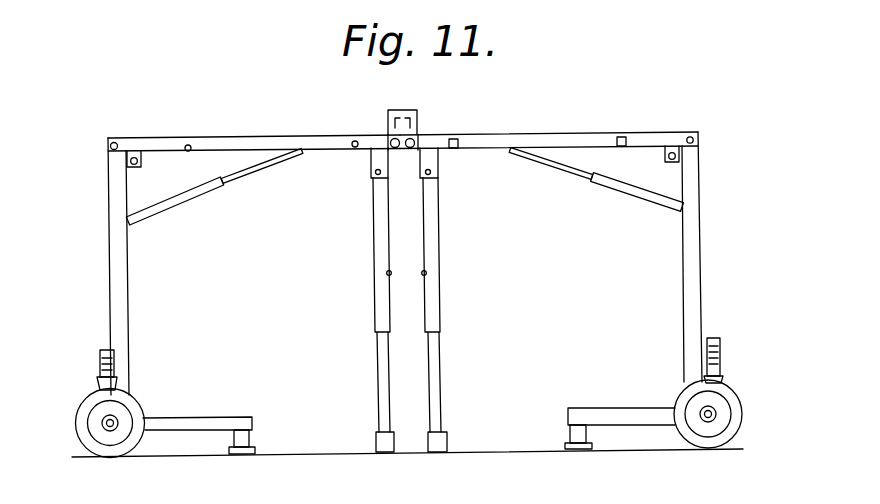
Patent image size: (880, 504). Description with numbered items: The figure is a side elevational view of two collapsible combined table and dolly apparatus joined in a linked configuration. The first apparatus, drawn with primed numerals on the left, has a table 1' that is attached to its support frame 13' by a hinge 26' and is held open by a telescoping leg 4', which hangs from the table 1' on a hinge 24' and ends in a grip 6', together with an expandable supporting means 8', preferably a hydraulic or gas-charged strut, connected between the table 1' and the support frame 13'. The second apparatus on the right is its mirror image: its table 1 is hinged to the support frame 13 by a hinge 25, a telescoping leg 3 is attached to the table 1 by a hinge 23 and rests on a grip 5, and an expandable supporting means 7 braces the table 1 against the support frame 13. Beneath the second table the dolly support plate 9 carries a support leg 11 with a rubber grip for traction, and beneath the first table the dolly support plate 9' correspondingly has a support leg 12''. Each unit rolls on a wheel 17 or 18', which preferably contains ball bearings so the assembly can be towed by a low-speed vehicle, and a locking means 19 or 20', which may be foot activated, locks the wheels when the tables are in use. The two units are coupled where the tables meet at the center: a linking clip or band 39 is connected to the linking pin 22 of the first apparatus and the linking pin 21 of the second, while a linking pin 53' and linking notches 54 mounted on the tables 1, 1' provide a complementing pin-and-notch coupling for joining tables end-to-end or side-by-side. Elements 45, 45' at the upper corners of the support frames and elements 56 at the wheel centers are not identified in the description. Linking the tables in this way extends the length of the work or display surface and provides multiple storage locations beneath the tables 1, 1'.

The table 1 is at (549, 121).
The table 1' is at (254, 123).
The telescoping leg 3 is at (437, 242).
The telescoping leg 4' is at (365, 305).
The grip 5 is at (445, 437).
The grip 6' is at (370, 436).
The expandable supporting means 7 is at (623, 188).
The expandable supporting means 8' is at (214, 194).
The dolly support plate 9 is at (621, 401).
The dolly support plate 9' is at (197, 401).
The support leg 11 is at (573, 432).
The support leg 12'' is at (272, 438).
The support frame 13 is at (709, 257).
The support frame 13' is at (99, 266).
The wheel 17 is at (708, 437).
The wheel 18' is at (110, 445).
The locking means 19 is at (721, 357).
The locking means 20' is at (96, 353).
The linking pin 21 is at (416, 138).
The linking pin 22 is at (389, 141).
The hinge 23 is at (438, 167).
The hinge 24' is at (359, 167).
The hinge 25 is at (668, 157).
The hinge 26' is at (155, 171).
The linking clip or band 39 is at (418, 134).
The pivot pin 45 is at (707, 120).
The pivot pin 45' is at (98, 119).
The linking pin 53' is at (271, 121).
The linking notch 54 is at (620, 140).
The axle 56 is at (100, 423).